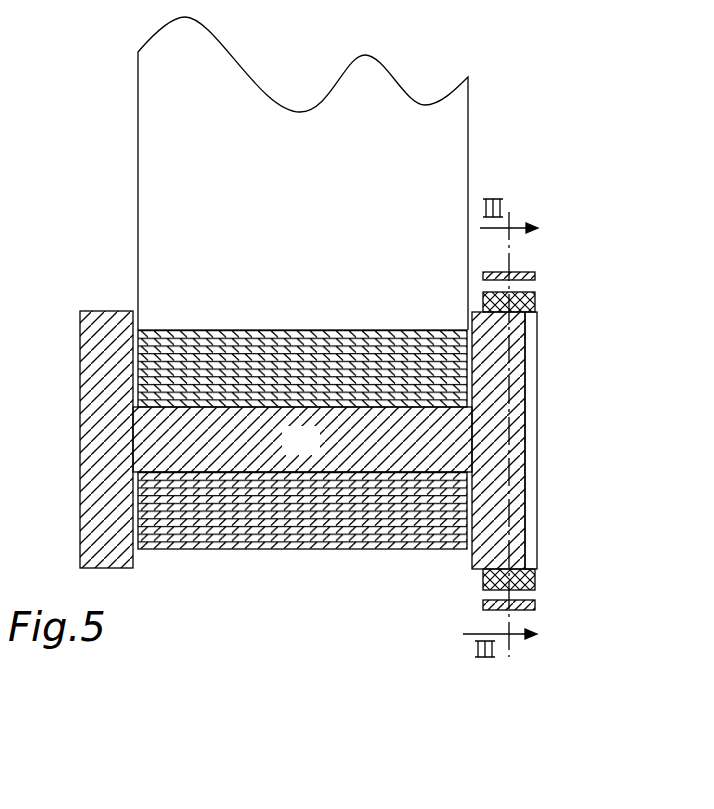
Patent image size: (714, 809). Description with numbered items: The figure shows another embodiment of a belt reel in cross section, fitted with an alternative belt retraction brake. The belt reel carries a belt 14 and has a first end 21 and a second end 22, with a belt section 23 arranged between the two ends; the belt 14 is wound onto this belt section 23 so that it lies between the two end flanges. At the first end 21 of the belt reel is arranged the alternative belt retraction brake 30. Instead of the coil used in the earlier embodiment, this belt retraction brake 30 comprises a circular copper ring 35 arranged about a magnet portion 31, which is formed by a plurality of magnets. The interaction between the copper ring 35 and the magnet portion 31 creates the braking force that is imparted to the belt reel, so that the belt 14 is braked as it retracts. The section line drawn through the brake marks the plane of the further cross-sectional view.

The belt 14 is at (167, 213).
The first end 21 is at (513, 440).
The second end 22 is at (100, 500).
The belt section 23 is at (314, 451).
The belt retraction brake 30 is at (561, 279).
The magnet portion 31 is at (535, 300).
The copper ring 35 is at (527, 605).